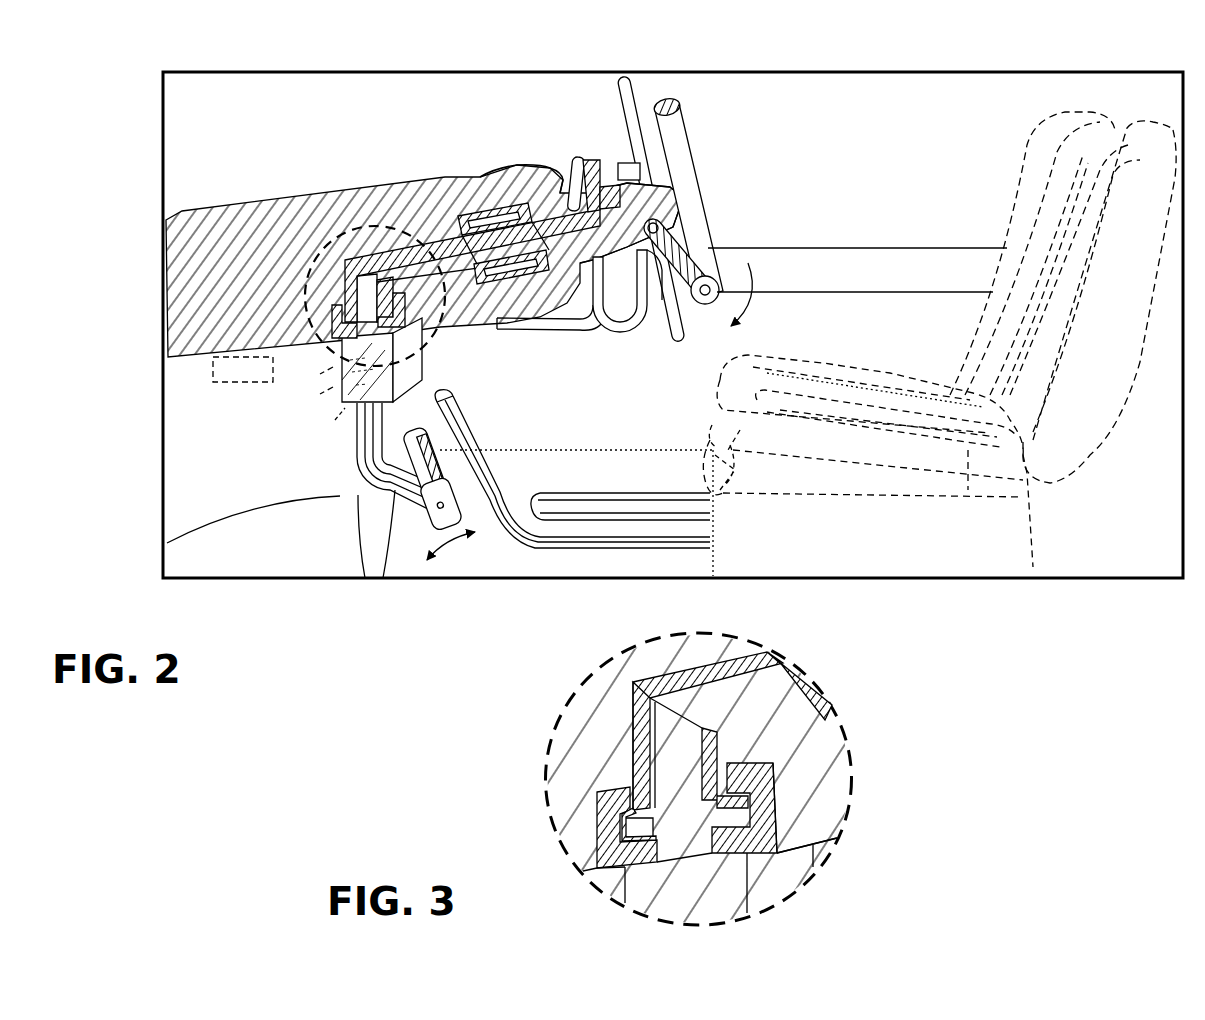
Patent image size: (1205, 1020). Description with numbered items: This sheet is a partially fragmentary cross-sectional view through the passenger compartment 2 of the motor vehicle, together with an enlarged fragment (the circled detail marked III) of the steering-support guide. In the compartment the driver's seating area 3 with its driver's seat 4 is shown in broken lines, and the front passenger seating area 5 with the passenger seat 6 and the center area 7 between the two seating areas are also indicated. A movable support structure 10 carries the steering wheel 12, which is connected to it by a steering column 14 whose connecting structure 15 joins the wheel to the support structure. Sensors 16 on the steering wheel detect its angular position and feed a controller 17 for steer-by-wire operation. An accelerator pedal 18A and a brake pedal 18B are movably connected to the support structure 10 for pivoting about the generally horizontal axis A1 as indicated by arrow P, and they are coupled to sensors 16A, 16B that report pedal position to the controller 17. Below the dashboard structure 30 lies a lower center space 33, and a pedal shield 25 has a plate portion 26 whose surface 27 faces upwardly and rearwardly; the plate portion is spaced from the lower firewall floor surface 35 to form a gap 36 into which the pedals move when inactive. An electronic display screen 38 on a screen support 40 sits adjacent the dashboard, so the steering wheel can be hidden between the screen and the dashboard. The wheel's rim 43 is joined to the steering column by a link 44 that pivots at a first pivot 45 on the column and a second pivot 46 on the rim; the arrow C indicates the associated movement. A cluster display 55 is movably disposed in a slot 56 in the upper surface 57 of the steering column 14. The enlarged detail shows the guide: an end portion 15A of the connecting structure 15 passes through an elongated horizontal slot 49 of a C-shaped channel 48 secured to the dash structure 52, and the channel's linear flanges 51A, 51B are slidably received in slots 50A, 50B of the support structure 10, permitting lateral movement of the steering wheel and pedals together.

In FIG. 2, the passenger compartment 2 is at (860, 120).
In FIG. 2, the driver's seating area 3 is at (924, 464).
In FIG. 2, the driver's seat 4 is at (967, 450).
In FIG. 2, the front passenger seating area 5 is at (906, 386).
In FIG. 2, the passenger seat 6 is at (872, 368).
In FIG. 2, the center area 7 is at (917, 372).
In FIG. 2, the movable support structure 10 is at (338, 370).
In FIG. 3, the movable support structure 10 is at (723, 880).
In FIG. 2, the steering wheel 12 is at (690, 115).
In FIG. 2, the steering column 14 is at (612, 264).
In FIG. 2, the connecting structure 15 is at (400, 262).
In FIG. 3, the connecting structure 15 is at (703, 702).
In FIG. 3, the end portion 15A is at (643, 781).
In FIG. 2, the sensors 16 is at (493, 217).
In FIG. 2, the sensor 16A is at (333, 367).
In FIG. 2, the sensor 16B is at (335, 387).
In FIG. 2, the controller 17 is at (213, 368).
In FIG. 2, the accelerator pedal 18A is at (395, 492).
In FIG. 2, the brake pedal 18B is at (412, 500).
In FIG. 2, the pedal shield 25 is at (503, 470).
In FIG. 2, the plate portion 26 is at (473, 440).
In FIG. 2, the surface 27 is at (515, 510).
In FIG. 2, the dashboard structure 30 is at (548, 156).
In FIG. 2, the lower center space 33 is at (424, 386).
In FIG. 2, the lower firewall floor surface 35 is at (397, 442).
In FIG. 2, the gap 36 is at (433, 400).
In FIG. 2, the electronic display screen 38 is at (637, 97).
In FIG. 2, the screen support 40 is at (643, 343).
In FIG. 2, the rim 43 is at (690, 153).
In FIG. 2, the link 44 is at (688, 253).
In FIG. 2, the first pivot 45 is at (677, 203).
In FIG. 2, the second pivot 46 is at (706, 286).
In FIG. 2, the channel 48 is at (332, 317).
In FIG. 3, the channel 48 is at (773, 763).
In FIG. 3, the elongated horizontal slot 49 is at (670, 763).
In FIG. 3, the slot 50A is at (627, 873).
In FIG. 3, the slot 50B is at (810, 847).
In FIG. 3, the flange 51A is at (640, 840).
In FIG. 3, the flange 51B is at (777, 807).
In FIG. 2, the dash structure 52 is at (192, 268).
In FIG. 2, the cluster display 55 is at (568, 157).
In FIG. 2, the slot 56 is at (584, 160).
In FIG. 2, the upper surface 57 is at (608, 187).
In FIG. 2, the horizontal axis A1 is at (327, 428).
In FIG. 2, the direction C is at (750, 322).
In FIG. 2, the arrow P is at (448, 548).
In FIG. 2, the section indicator III is at (240, 210).